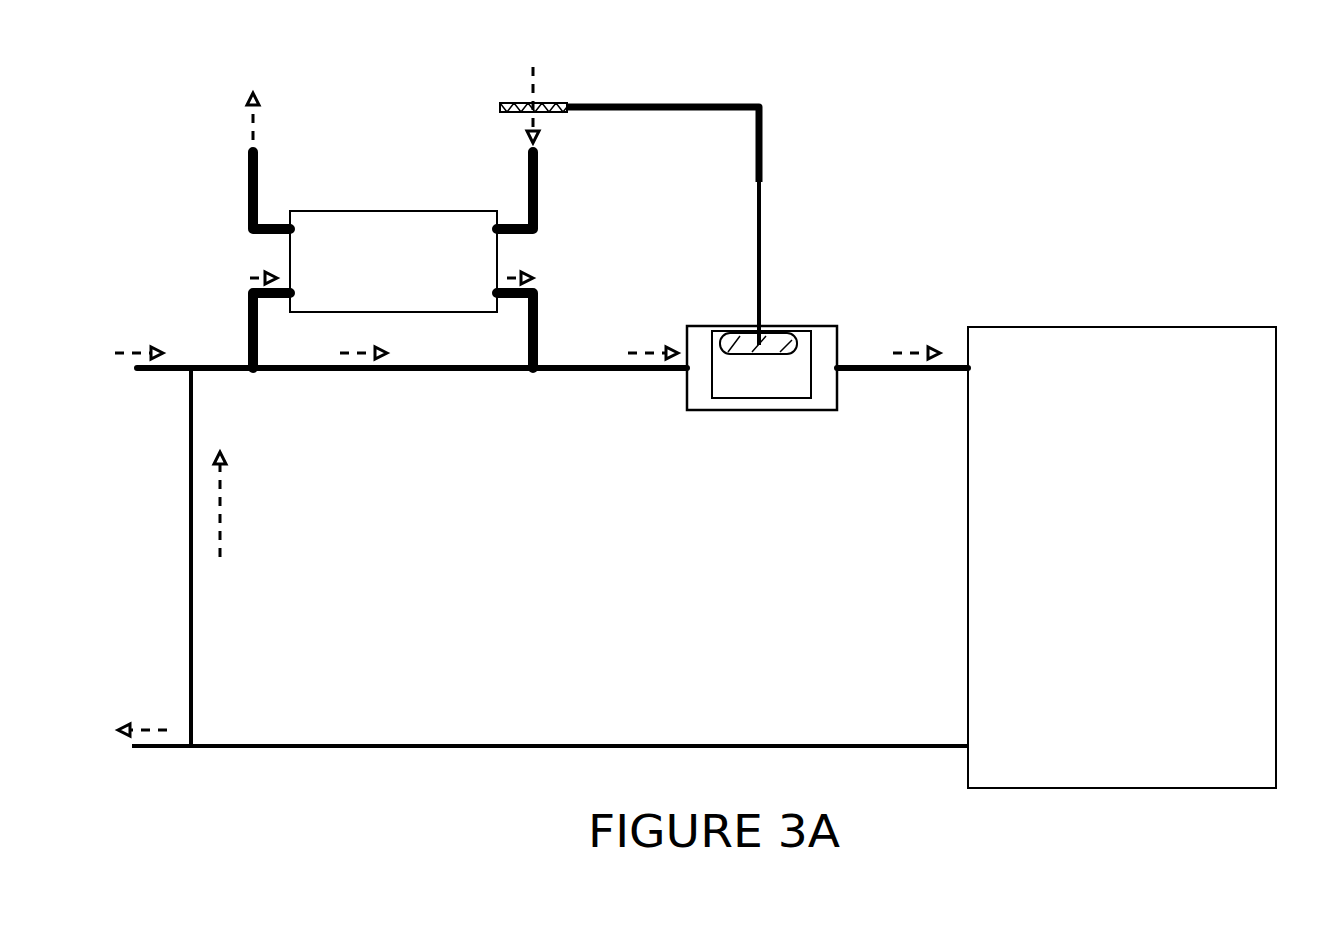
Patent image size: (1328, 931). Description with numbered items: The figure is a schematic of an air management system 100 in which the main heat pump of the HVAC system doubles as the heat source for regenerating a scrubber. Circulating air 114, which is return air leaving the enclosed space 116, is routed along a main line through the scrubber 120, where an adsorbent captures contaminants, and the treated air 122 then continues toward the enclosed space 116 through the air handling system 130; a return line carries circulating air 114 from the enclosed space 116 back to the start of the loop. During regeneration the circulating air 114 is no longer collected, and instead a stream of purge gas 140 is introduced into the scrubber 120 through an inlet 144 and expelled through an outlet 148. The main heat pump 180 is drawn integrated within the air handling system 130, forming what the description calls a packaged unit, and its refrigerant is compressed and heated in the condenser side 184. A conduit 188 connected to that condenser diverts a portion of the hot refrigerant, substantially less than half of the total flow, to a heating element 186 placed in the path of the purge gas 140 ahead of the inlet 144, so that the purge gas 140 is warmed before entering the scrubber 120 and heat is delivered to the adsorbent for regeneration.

The system 100 is at (1258, 147).
The circulating air 114 is at (267, 277).
The enclosed space 116 is at (1040, 327).
The scrubber 120 is at (402, 210).
The treated air 122 is at (527, 273).
The air handling system 130 is at (820, 325).
The purge gas 140 is at (530, 134).
The inlet 144 is at (538, 222).
The outlet 148 is at (247, 188).
The main heat pump 180 is at (712, 357).
The condenser side 184 is at (745, 341).
The heating element 186 is at (500, 108).
The conduit 188 is at (650, 105).